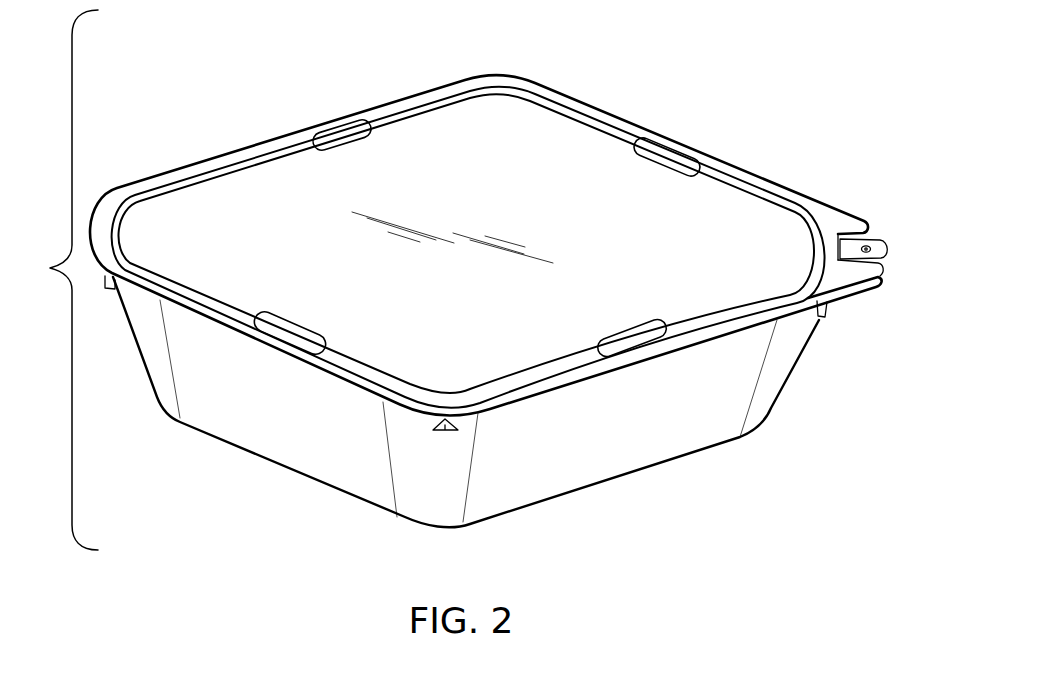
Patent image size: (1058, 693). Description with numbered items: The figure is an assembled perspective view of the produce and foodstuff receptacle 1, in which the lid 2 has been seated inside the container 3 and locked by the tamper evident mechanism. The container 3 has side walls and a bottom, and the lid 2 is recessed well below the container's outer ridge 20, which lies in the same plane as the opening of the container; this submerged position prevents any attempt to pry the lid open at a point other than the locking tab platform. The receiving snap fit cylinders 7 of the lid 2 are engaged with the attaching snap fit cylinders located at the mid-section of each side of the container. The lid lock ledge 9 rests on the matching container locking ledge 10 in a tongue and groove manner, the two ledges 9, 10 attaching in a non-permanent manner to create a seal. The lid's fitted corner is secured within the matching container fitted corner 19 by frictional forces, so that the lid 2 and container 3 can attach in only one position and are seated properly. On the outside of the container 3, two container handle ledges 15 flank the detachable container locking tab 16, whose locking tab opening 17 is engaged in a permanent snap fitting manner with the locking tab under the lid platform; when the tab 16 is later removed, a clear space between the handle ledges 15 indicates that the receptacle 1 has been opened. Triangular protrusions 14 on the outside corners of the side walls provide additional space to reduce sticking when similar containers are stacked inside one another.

The produce and foodstuff receptacle 1 is at (63, 280).
The lid 2 is at (522, 222).
The container 3 is at (318, 485).
The receiving snap fit cylinders 7 is at (351, 128).
The lid lock ledge 9 is at (497, 70).
The container locking ledge 10 is at (547, 100).
The triangular protrusions 14 is at (112, 287).
The container handle ledges 15 is at (855, 220).
The detachable container locking tab 16 is at (886, 247).
The locking tab opening 17 is at (868, 246).
The container fitted corner 19 is at (813, 217).
The container outer ridge 20 is at (486, 216).